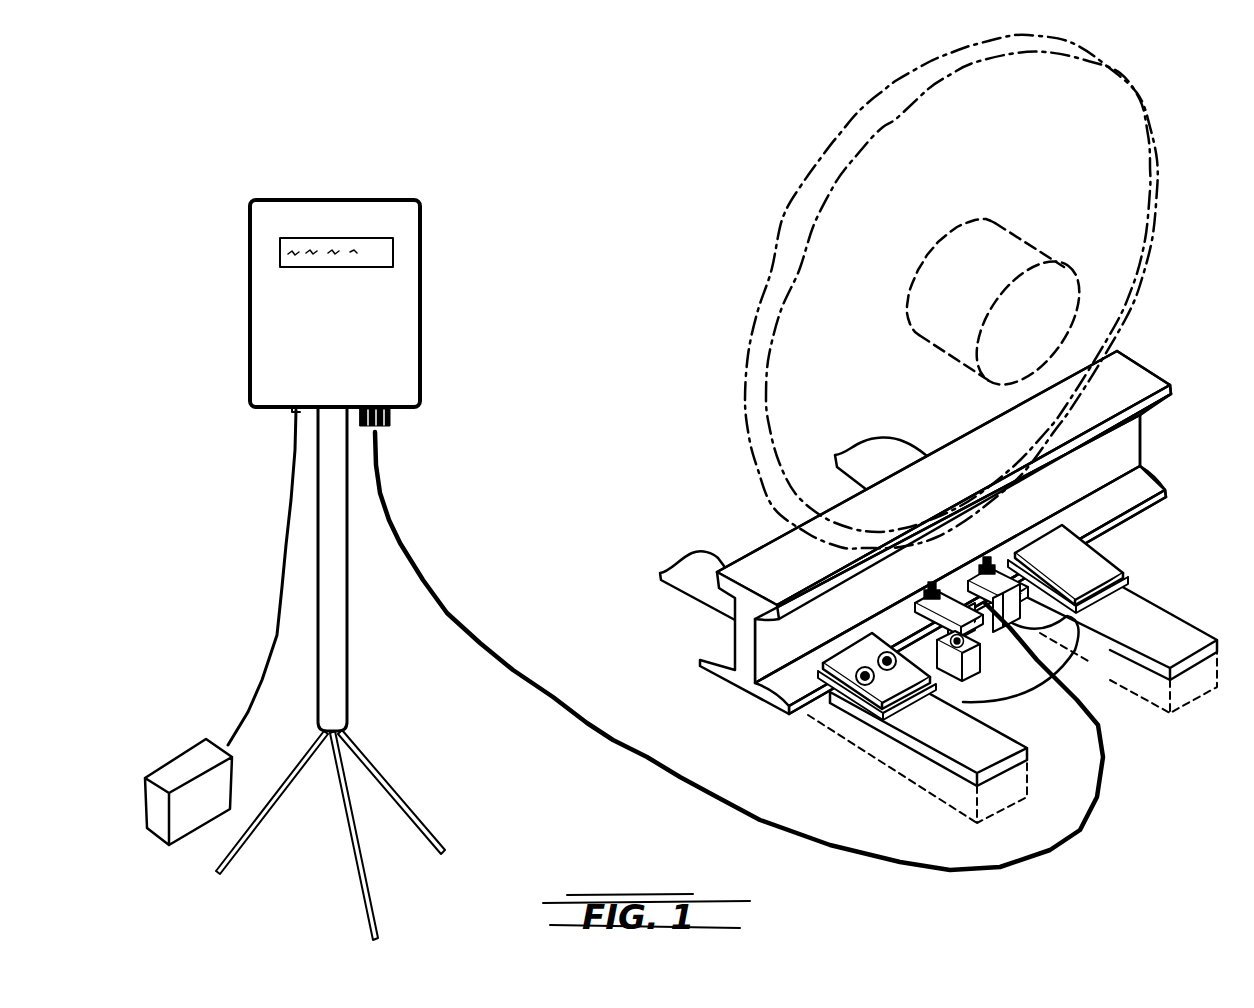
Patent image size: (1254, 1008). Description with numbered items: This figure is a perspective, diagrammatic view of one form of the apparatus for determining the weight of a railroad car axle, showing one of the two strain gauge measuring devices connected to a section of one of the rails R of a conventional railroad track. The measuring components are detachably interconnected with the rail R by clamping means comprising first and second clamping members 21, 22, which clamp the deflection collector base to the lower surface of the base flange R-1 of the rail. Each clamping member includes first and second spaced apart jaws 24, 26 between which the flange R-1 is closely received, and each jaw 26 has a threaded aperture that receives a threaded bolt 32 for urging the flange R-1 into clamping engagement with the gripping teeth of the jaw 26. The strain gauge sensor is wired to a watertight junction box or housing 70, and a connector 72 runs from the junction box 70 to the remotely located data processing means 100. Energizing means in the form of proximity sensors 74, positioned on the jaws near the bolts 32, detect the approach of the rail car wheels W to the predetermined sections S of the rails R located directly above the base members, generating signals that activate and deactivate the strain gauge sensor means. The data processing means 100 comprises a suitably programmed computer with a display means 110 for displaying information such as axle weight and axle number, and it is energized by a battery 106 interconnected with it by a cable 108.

The data processing means 100 is at (410, 337).
The display means 110 is at (393, 255).
The battery 106 is at (187, 765).
The cable 108 is at (280, 587).
The connector 72 is at (608, 740).
The junction box 70 is at (960, 670).
The sensors 74 is at (1090, 542).
The first clamping member 21 is at (915, 613).
The second clamping member 22 is at (997, 607).
The first jaw 24 is at (1102, 552).
The second jaw 26 is at (1007, 702).
The threaded bolt 32 is at (1013, 600).
The wheels W is at (1122, 180).
The predetermined sections S is at (915, 497).
The rails R is at (768, 560).
The base flange R-1 is at (788, 687).